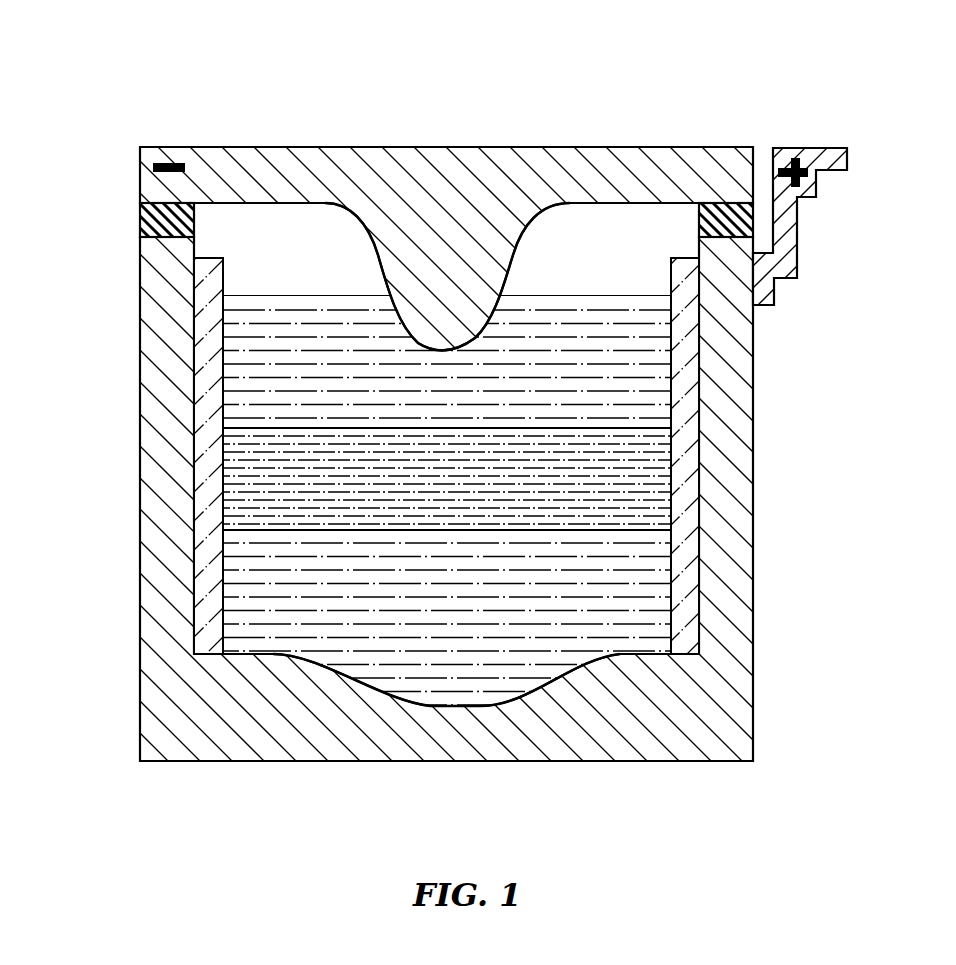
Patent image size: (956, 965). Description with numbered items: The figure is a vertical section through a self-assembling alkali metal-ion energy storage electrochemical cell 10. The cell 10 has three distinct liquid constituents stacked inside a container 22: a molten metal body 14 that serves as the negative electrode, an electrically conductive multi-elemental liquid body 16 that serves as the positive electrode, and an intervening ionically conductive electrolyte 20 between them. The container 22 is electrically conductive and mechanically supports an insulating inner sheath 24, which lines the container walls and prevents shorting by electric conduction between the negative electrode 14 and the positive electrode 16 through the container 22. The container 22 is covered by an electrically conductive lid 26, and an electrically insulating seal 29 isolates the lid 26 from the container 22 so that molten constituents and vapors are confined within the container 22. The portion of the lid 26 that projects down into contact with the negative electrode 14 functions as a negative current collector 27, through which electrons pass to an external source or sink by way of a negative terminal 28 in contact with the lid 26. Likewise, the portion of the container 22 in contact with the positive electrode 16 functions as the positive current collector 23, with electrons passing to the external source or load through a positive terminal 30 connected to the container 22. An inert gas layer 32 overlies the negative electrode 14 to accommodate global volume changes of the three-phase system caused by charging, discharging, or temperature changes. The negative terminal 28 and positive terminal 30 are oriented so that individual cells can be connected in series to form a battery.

The alkali metal ion energy storage cell 10 is at (288, 66).
The molten metal body 14 is at (240, 318).
The electrically conductive multi-elemental liquid body 16 is at (240, 617).
The ionically conductive electrolyte 20 is at (238, 500).
The container 22 is at (150, 704).
The positive current collector 23 is at (483, 708).
The insulating inner sheath 24 is at (686, 633).
The lid 26 is at (482, 165).
The negative current collector 27 is at (435, 280).
The negative terminal 28 is at (148, 163).
The electrically insulating seal 29 is at (147, 210).
The positive terminal 30 is at (836, 148).
The inert gas layer 32 is at (573, 233).